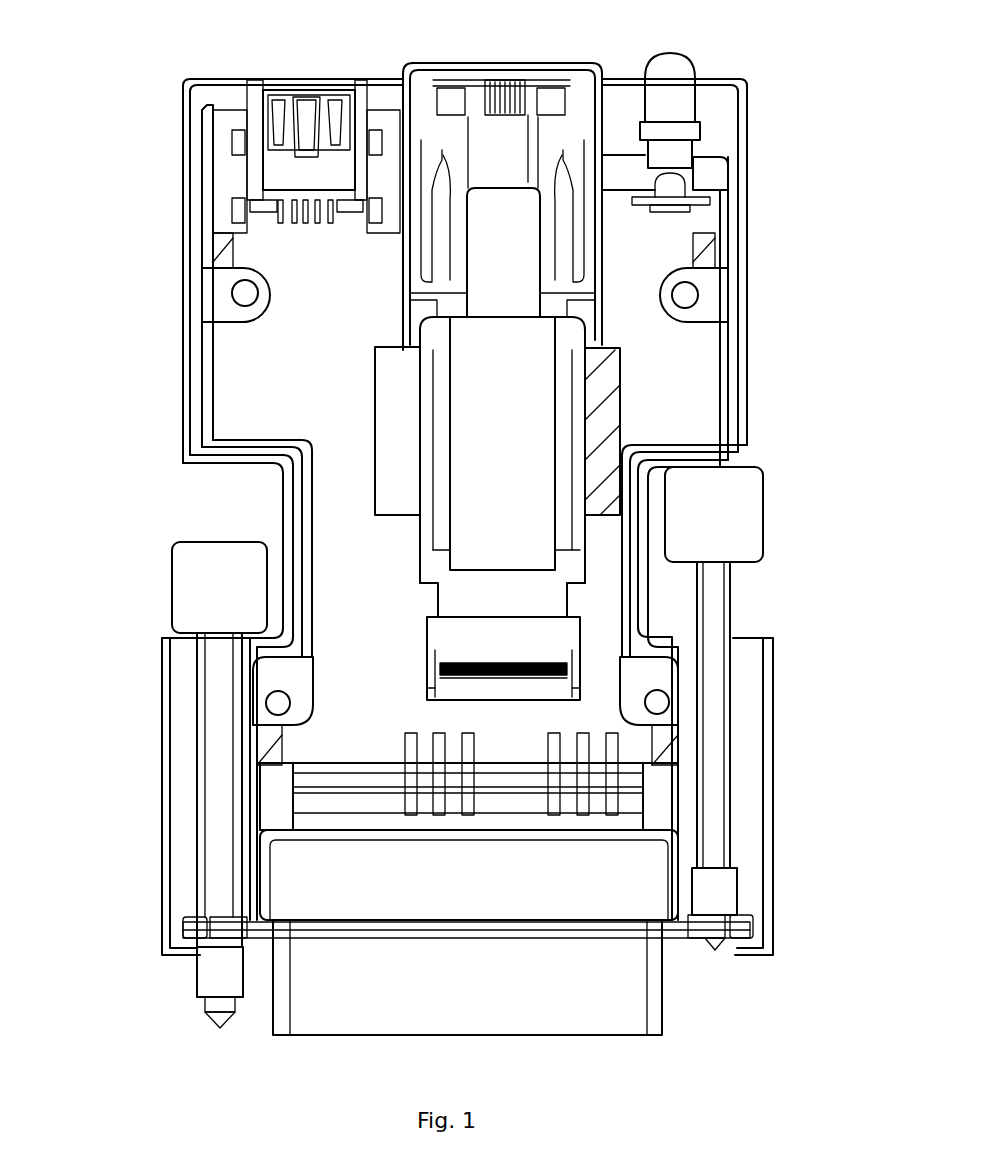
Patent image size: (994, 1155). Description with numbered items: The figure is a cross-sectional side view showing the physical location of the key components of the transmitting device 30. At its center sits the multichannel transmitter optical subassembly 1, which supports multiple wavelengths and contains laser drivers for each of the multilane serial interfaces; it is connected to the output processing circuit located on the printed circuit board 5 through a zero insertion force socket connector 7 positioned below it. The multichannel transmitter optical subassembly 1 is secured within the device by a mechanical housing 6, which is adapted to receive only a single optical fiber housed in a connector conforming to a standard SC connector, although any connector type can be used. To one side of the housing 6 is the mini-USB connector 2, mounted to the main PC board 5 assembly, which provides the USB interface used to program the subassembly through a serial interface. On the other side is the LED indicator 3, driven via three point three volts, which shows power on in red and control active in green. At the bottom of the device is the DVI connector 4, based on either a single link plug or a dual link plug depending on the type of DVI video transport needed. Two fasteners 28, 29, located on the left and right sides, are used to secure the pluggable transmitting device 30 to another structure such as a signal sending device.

The multichannel transmitter optical subassembly 1 is at (533, 428).
The mini-USB connector 2 is at (307, 100).
The LED indicator 3 is at (687, 62).
The DVI connector 4 is at (635, 1035).
The printed circuit board 5 is at (228, 355).
The mechanical housing 6 is at (467, 180).
The zero insertion force socket connector 7 is at (570, 650).
The fastener 28 is at (172, 580).
The fastener 29 is at (762, 528).
The transmitting device 30 is at (827, 229).